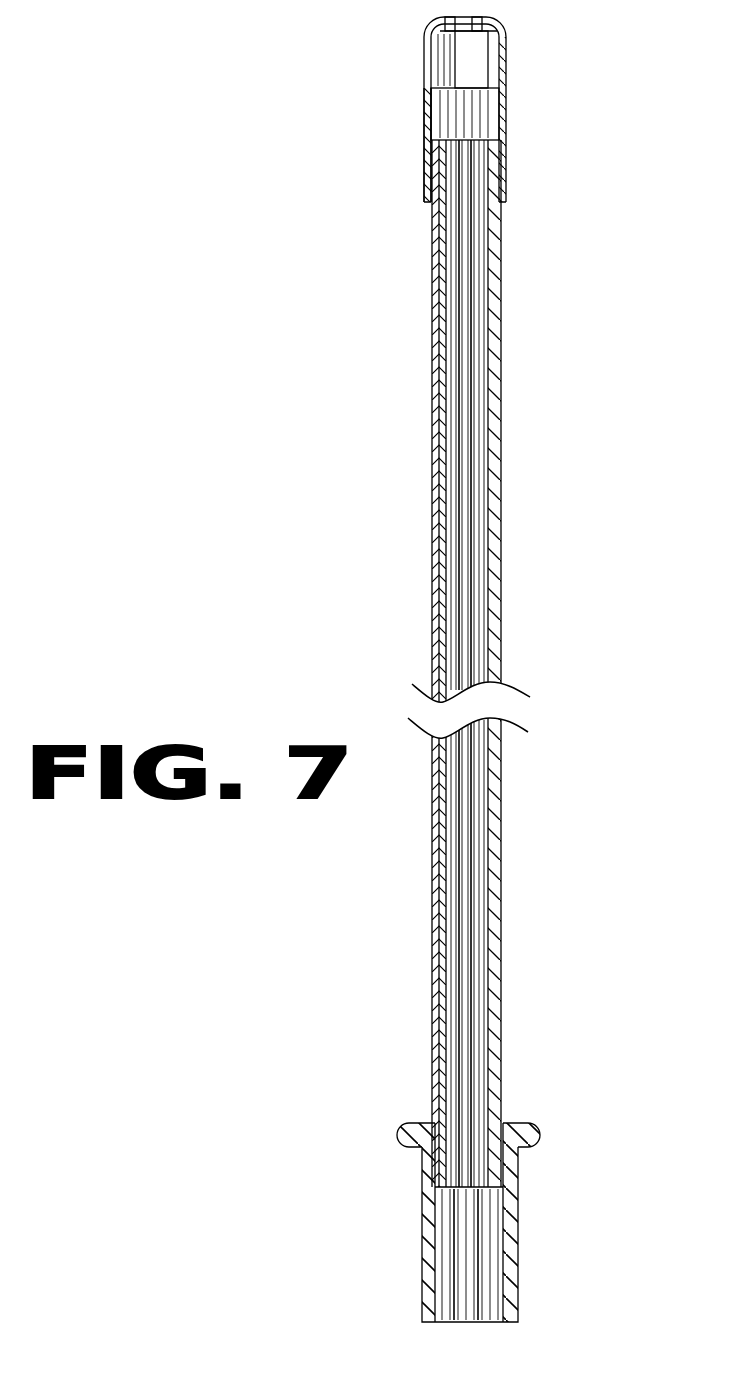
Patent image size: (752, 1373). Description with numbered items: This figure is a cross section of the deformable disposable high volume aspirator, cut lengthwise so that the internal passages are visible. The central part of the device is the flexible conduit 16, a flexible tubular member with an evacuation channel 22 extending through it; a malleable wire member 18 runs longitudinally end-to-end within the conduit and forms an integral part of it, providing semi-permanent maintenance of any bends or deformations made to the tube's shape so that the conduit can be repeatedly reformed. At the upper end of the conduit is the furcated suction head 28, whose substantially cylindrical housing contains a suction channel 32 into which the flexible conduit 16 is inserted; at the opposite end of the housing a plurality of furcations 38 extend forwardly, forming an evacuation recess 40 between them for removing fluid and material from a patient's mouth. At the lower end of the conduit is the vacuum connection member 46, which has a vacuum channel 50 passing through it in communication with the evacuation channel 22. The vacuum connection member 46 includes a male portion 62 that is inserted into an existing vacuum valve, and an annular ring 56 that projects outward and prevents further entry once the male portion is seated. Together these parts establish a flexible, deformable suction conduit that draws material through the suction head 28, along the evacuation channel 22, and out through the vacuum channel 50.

The flexible conduit 16 is at (487, 279).
The wire member 18 is at (432, 577).
The evacuation channel 22 is at (466, 969).
The furcated suction head 28 is at (428, 167).
The suction channel 32 is at (457, 112).
The furcation 38 is at (433, 45).
The evacuation recess 40 is at (480, 77).
The vacuum connection member 46 is at (428, 1223).
The vacuum channel 50 is at (452, 1283).
The annular ring 56 is at (533, 1120).
The male portion of vacuum connection member 62 is at (518, 1268).